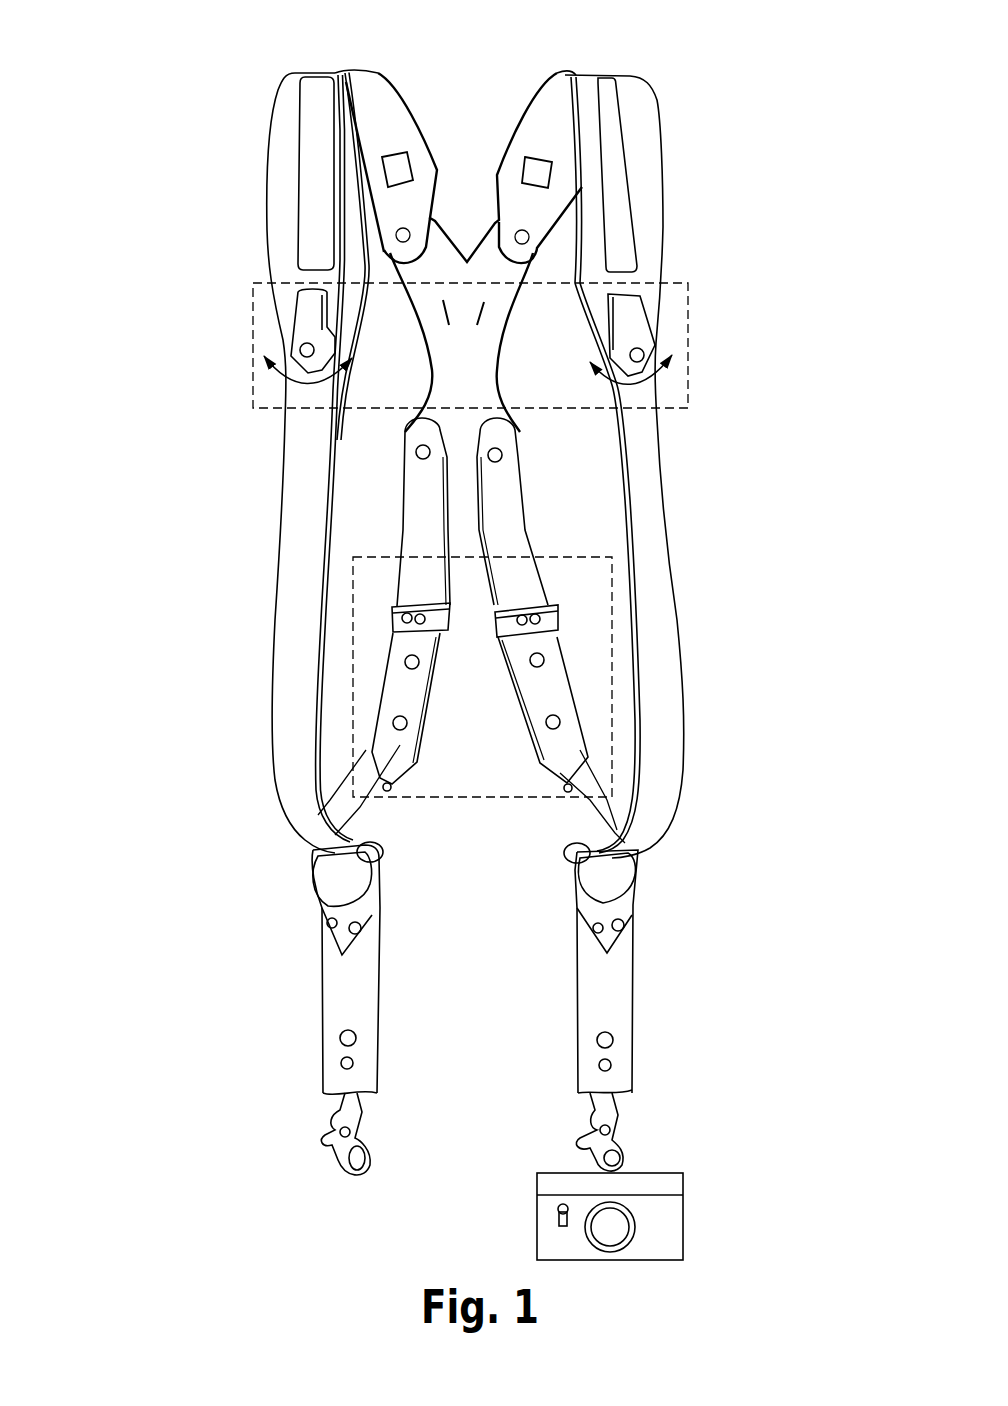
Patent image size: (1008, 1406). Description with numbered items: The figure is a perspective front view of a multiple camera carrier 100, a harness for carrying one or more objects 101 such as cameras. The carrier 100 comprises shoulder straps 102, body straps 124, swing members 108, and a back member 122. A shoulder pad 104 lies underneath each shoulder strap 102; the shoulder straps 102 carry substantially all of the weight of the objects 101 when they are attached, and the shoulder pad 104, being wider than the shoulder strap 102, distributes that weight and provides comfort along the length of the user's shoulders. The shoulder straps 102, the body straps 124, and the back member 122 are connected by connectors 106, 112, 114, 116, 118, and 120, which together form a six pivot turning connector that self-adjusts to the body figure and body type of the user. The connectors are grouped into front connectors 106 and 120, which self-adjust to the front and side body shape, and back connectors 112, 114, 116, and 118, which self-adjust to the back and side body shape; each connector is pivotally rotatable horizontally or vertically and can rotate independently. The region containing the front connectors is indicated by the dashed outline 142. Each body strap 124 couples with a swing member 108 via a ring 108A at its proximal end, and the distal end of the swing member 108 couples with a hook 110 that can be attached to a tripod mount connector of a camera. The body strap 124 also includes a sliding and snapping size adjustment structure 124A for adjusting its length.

The multiple camera carrier 100 is at (106, 38).
The object 101 is at (705, 1218).
The shoulder strap 102 is at (347, 69).
The shoulder pad 104 is at (260, 173).
The connector 106 is at (655, 340).
The swing member 108 is at (313, 985).
The ring 108A is at (556, 858).
The hook 110 is at (318, 1157).
The connector 112 is at (533, 250).
The connector 114 is at (510, 462).
The connector 116 is at (394, 250).
The connector 118 is at (410, 460).
The connector 120 is at (290, 342).
The back member 122 is at (483, 366).
The body strap 124 is at (258, 580).
The sliding and snapping size adjustment structure 124A is at (595, 549).
The connector region 142 is at (252, 293).